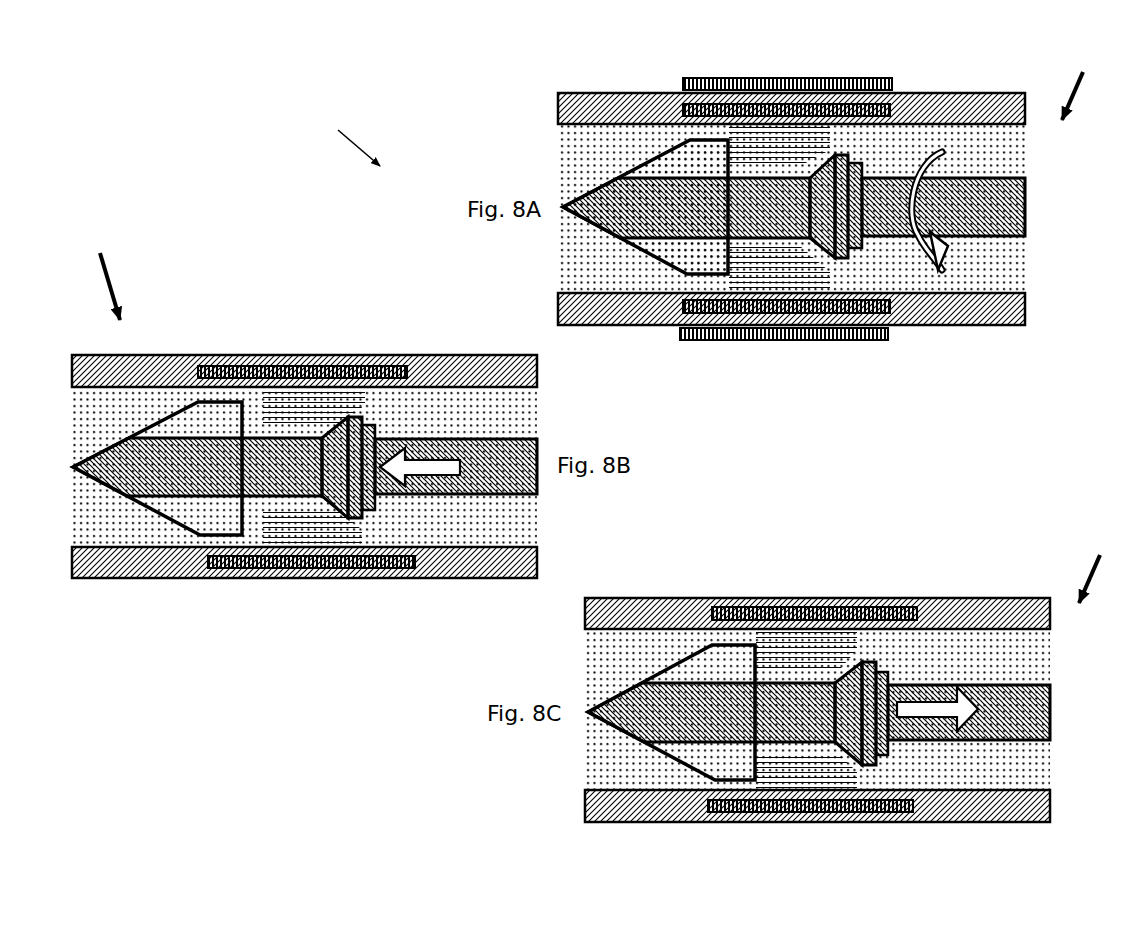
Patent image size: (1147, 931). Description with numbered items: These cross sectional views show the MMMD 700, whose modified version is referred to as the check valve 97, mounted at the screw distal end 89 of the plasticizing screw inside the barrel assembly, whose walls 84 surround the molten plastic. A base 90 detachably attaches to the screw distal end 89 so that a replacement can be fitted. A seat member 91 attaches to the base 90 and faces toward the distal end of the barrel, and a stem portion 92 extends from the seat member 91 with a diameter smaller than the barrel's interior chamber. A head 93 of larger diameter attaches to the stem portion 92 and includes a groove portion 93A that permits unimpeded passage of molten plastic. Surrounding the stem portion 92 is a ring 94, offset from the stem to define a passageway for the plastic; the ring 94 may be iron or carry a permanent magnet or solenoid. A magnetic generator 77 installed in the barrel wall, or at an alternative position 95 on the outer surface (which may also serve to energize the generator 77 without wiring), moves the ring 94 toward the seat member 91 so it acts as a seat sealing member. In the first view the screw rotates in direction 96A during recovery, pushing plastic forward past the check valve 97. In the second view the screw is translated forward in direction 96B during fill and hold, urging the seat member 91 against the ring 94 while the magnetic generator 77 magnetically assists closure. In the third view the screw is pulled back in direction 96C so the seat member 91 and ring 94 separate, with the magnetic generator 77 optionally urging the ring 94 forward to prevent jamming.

In FIG. 8B, the MMMD 700 is at (319, 126).
In FIG. 8A, the magnetic generator 77 is at (785, 108).
In FIG. 8B, the magnetic generator 77 is at (262, 378).
In FIG. 8C, the magnetic generator 77 is at (775, 610).
In FIG. 8A, the housing wall 84 is at (615, 105).
In FIG. 8B, the housing wall 84 is at (168, 368).
In FIG. 8C, the housing wall 84 is at (682, 608).
In FIG. 8A, the screw distal end 89 is at (947, 207).
In FIG. 8B, the screw distal end 89 is at (485, 475).
In FIG. 8C, the screw distal end 89 is at (1000, 720).
In FIG. 8A, the base 90 is at (878, 182).
In FIG. 8B, the base 90 is at (378, 437).
In FIG. 8C, the base 90 is at (892, 682).
In FIG. 8A, the seat member 91 is at (825, 210).
In FIG. 8B, the seat member 91 is at (345, 510).
In FIG. 8C, the seat member 91 is at (843, 720).
In FIG. 8A, the stem portion 92 is at (775, 210).
In FIG. 8B, the stem portion 92 is at (282, 473).
In FIG. 8C, the stem portion 92 is at (797, 720).
In FIG. 8A, the head 93 is at (660, 213).
In FIG. 8B, the head 93 is at (168, 478).
In FIG. 8C, the head 93 is at (682, 723).
In FIG. 8A, the groove portion 93A is at (707, 255).
In FIG. 8A, the ring 94 is at (795, 145).
In FIG. 8B, the ring 94 is at (313, 398).
In FIG. 8C, the ring 94 is at (828, 643).
In FIG. 8A, the another position for the magnetic generator 95 is at (735, 85).
In FIG. 8A, the direction 96A is at (940, 262).
In FIG. 8B, the direction 96B is at (410, 472).
In FIG. 8C, the direction 96C is at (925, 713).
In FIG. 8A, the check valve 97 is at (1068, 66).
In FIG. 8B, the check valve 97 is at (86, 248).
In FIG. 8C, the check valve 97 is at (1086, 548).